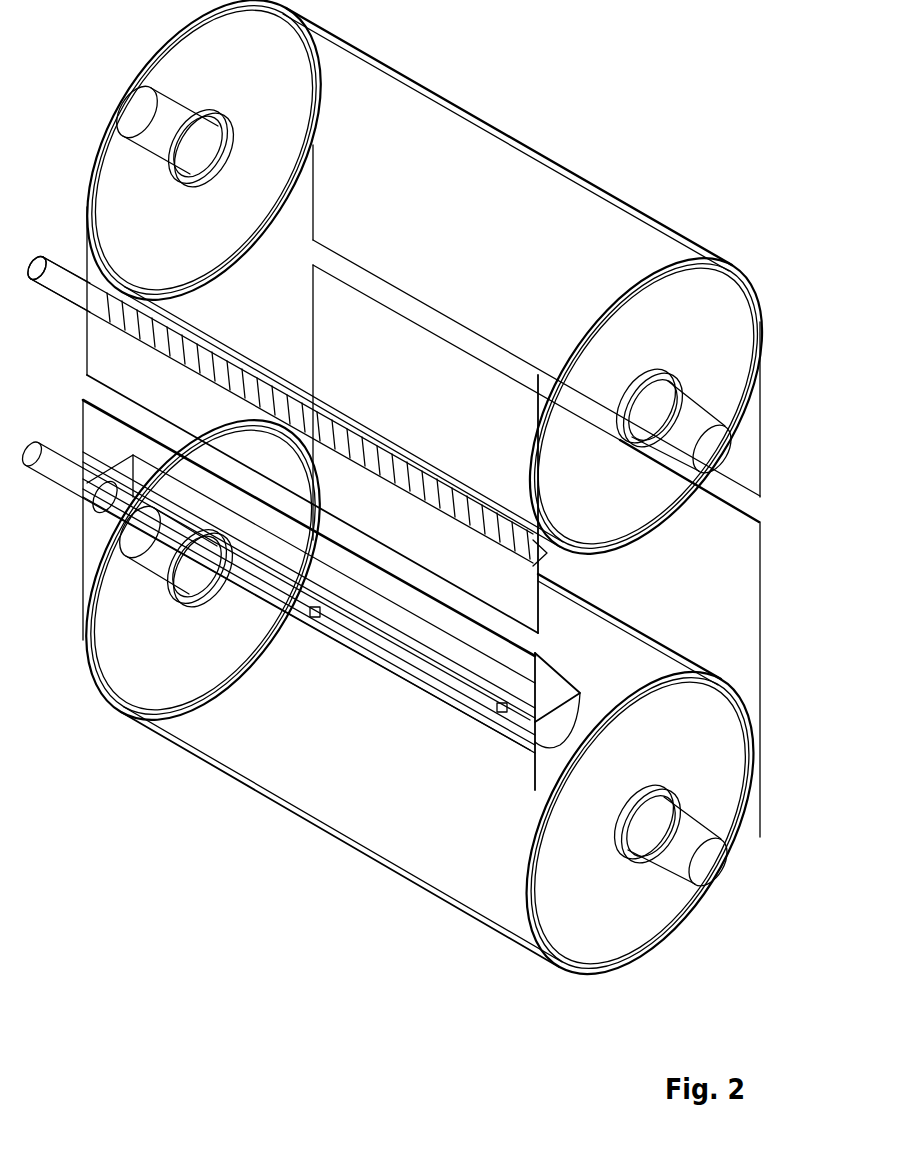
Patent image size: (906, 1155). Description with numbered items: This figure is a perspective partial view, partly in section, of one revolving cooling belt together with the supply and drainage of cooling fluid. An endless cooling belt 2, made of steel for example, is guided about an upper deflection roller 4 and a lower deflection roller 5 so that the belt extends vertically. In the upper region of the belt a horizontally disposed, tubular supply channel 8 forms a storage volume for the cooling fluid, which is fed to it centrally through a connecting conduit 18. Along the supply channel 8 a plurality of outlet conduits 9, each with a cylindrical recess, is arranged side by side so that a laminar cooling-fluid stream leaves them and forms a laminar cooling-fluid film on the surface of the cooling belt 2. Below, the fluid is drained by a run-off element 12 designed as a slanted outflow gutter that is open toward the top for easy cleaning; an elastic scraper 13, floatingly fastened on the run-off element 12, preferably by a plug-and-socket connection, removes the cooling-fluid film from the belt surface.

The cooling belt 2 is at (727, 659).
The upper deflection roller 4 is at (698, 297).
The lower deflection roller 5 is at (597, 937).
The tubular supply channel 8 is at (62, 272).
The outlet conduits 9 is at (140, 338).
The run-off element 12 is at (545, 688).
The elastic scraper 13 is at (442, 652).
The connecting conduit 18 is at (50, 283).